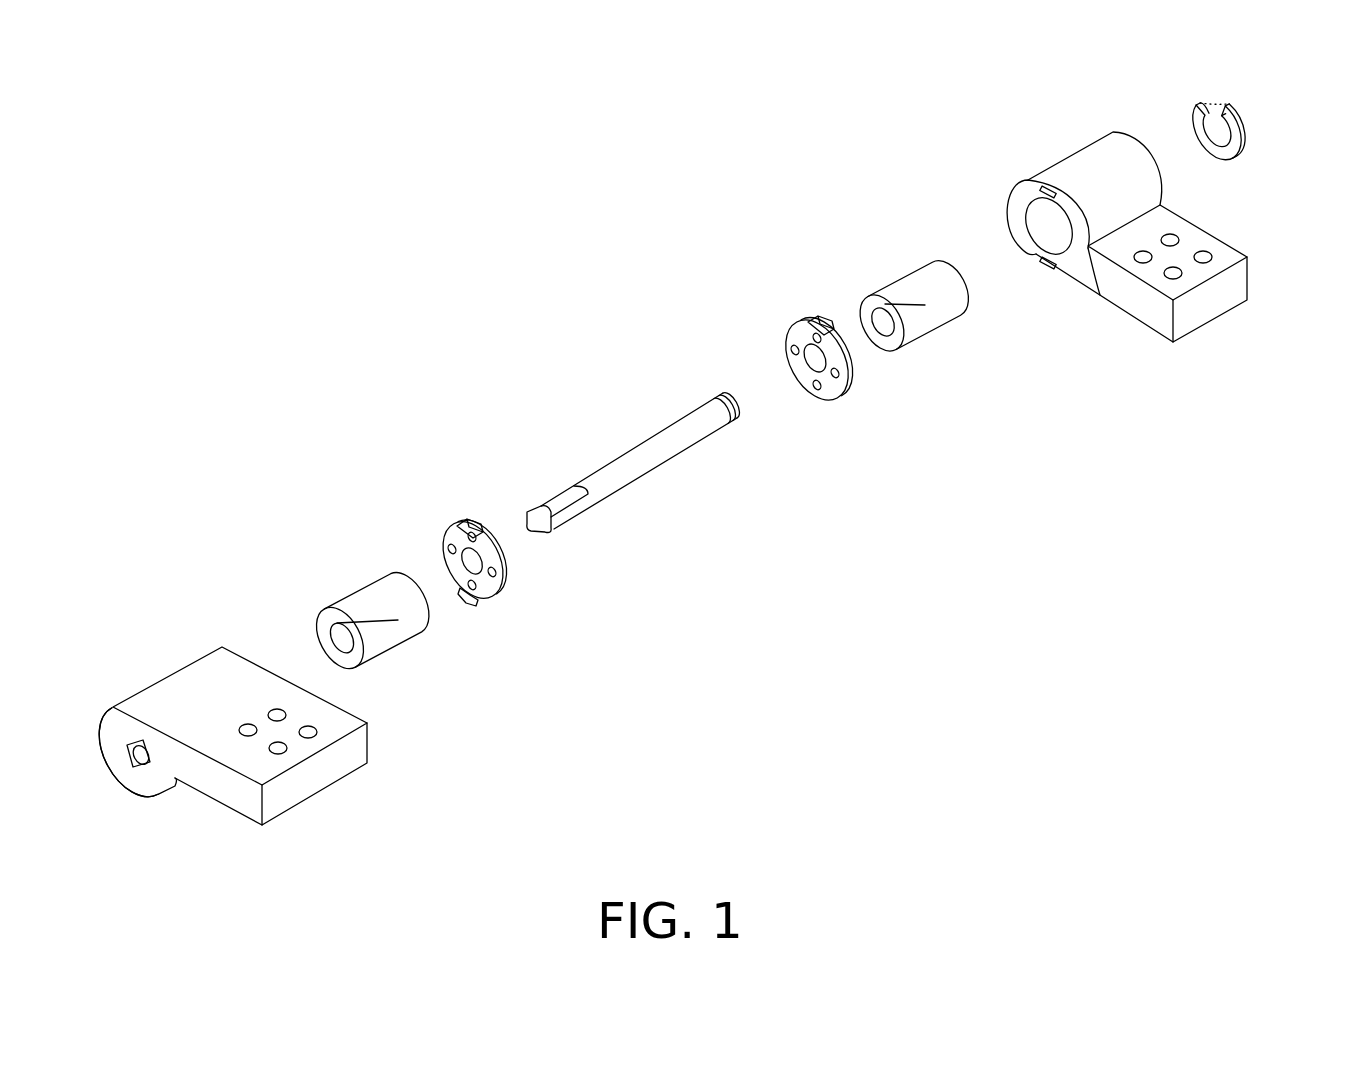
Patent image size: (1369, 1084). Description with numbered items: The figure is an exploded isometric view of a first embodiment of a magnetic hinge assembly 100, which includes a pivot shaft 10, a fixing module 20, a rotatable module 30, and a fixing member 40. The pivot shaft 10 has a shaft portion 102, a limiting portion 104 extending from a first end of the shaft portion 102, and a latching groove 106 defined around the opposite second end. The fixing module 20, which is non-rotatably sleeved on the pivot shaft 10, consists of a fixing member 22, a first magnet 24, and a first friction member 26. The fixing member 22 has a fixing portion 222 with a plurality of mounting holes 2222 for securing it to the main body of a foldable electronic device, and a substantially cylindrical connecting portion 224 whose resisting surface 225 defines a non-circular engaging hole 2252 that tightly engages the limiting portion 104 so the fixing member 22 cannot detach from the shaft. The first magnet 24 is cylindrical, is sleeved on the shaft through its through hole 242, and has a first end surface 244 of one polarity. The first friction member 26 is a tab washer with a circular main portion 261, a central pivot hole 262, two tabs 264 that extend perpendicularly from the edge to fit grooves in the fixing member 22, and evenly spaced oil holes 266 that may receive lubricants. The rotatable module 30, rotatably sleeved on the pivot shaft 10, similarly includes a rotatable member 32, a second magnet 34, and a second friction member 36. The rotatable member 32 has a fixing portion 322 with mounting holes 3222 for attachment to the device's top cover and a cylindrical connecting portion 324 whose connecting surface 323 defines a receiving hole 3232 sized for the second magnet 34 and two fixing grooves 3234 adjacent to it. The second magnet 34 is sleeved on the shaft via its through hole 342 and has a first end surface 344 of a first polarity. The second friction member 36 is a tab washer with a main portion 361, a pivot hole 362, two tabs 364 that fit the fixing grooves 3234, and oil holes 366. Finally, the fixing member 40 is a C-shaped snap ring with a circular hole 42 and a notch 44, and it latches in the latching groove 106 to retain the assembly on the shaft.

The magnetic hinge assembly 100 is at (418, 282).
The pivot shaft 10 is at (635, 502).
The shaft portion 102 is at (655, 448).
The limiting portion 104 is at (558, 502).
The latching groove 106 is at (733, 395).
The fixing module 20 is at (362, 453).
The fixing member 22 is at (205, 643).
The fixing portion 222 is at (332, 772).
The mounting holes 2222 is at (280, 748).
The connecting portion 224 is at (157, 697).
The resisting surface 225 is at (110, 747).
The engaging hole 2252 is at (138, 760).
The first magnet 24 is at (312, 570).
The through hole 242 is at (363, 653).
The first end surface 244 is at (340, 620).
The first friction member 26 is at (437, 493).
The main portion 261 is at (487, 555).
The pivot hole 262 is at (475, 567).
The tabs 264 is at (482, 520).
The oil holes 266 is at (490, 572).
The rotatable module 30 is at (952, 111).
The rotatable member 32 is at (1033, 158).
The fixing portion 322 is at (1240, 288).
The mounting holes 3222 is at (1205, 255).
The connecting surface 323 is at (1062, 207).
The receiving hole 3232 is at (1057, 238).
The fixing grooves 3234 is at (1048, 267).
The connecting portion 324 is at (1118, 188).
The second magnet 34 is at (880, 247).
The through hole 342 is at (887, 322).
The first end surface 344 is at (947, 302).
The second friction member 36 is at (780, 303).
The main portion 361 is at (850, 370).
The pivot hole 362 is at (808, 368).
The tabs 364 is at (819, 318).
The oil holes 366 is at (833, 397).
The fixing member 40 is at (1230, 148).
The circular hole 42 is at (1220, 133).
The notch 44 is at (1212, 107).